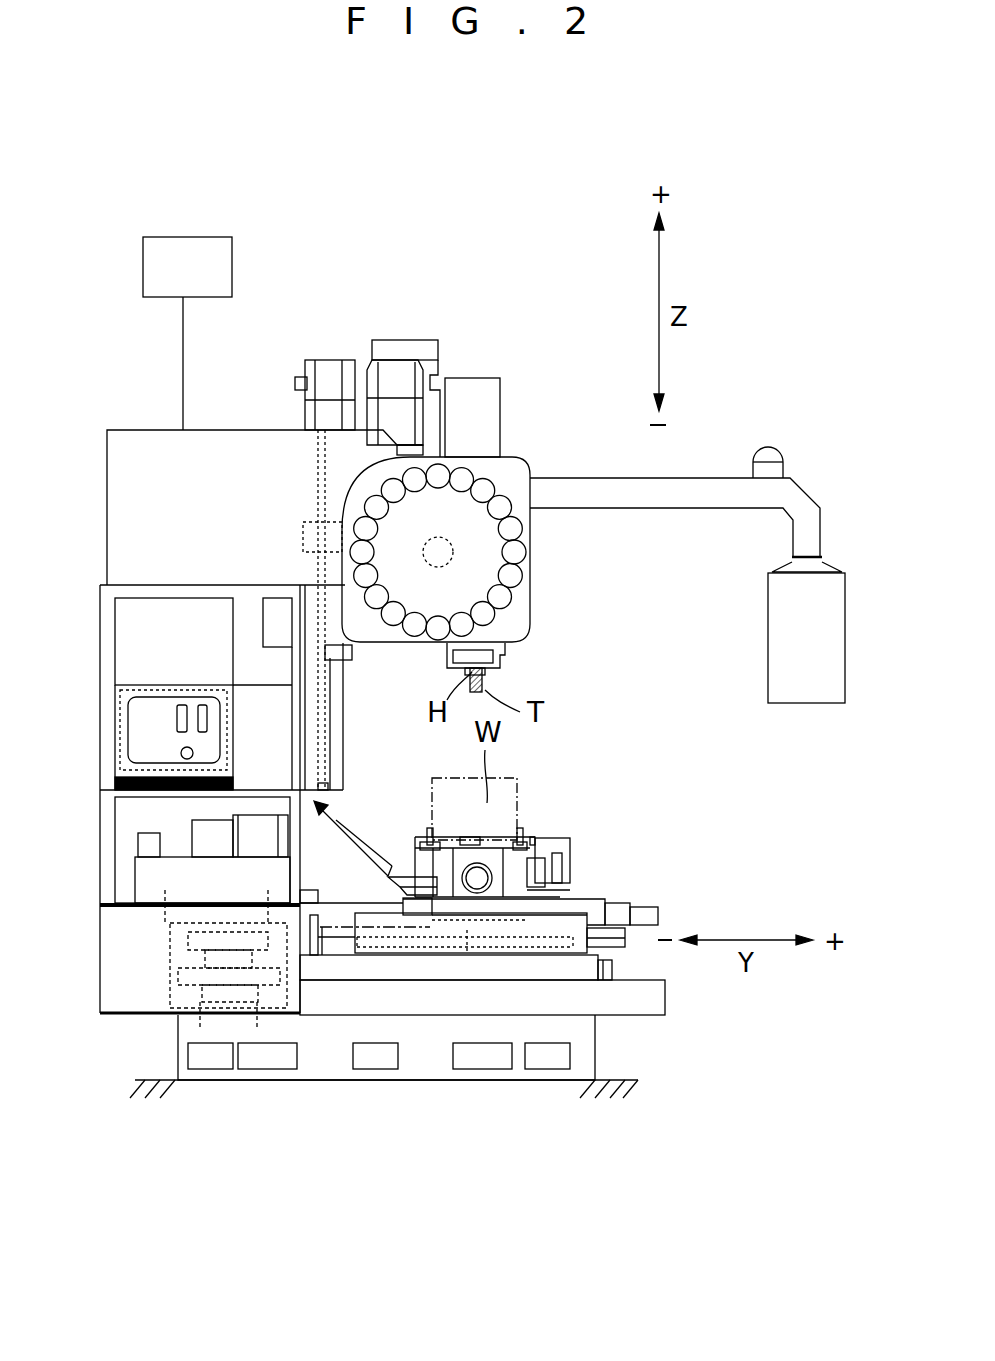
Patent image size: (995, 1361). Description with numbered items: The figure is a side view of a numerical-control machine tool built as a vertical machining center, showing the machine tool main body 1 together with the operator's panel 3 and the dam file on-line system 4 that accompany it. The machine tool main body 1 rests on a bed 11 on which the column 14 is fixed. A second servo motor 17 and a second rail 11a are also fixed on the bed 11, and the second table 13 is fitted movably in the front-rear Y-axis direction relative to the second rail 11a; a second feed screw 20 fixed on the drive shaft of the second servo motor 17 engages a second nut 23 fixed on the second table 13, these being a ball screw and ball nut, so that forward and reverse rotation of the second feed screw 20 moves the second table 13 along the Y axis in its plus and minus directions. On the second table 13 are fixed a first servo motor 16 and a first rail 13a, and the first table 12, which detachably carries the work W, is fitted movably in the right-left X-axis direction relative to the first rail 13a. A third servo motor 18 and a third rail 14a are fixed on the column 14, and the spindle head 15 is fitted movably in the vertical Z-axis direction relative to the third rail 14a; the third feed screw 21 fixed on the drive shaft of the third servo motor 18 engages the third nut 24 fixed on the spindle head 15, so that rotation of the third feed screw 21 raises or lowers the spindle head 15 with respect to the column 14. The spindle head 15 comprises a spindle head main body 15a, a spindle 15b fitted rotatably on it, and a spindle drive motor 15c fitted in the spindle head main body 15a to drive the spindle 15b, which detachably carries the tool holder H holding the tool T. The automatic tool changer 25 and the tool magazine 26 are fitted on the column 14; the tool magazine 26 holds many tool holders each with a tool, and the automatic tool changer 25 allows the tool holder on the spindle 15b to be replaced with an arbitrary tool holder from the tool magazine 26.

The machine tool main body 1 is at (308, 298).
The operator's panel 3 is at (803, 660).
The dam file on-line system 4 is at (150, 281).
The bed 11 is at (428, 1062).
The second rail 11a is at (575, 900).
The first table 12 is at (520, 795).
The second table 13 is at (550, 897).
The first rail 13a is at (418, 873).
The column 14 is at (302, 723).
The third rail 14a is at (308, 677).
The spindle head 15 is at (480, 447).
The spindle head main body 15a is at (482, 430).
The spindle 15b is at (448, 651).
The spindle drive motor 15c is at (395, 340).
The first servo motor 16 is at (382, 887).
The second servo motor 17 is at (340, 947).
The third servo motor 18 is at (325, 390).
The second feed screw 20 is at (548, 948).
The third feed screw 21 is at (320, 475).
The second nut 23 is at (473, 950).
The third nut 24 is at (310, 538).
The automatic tool changer 25 is at (470, 652).
The tool magazine 26 is at (477, 551).